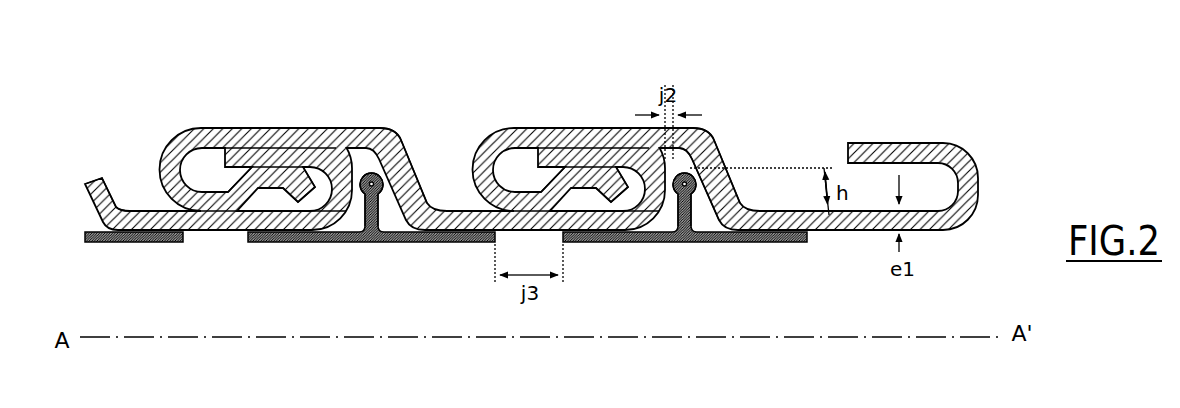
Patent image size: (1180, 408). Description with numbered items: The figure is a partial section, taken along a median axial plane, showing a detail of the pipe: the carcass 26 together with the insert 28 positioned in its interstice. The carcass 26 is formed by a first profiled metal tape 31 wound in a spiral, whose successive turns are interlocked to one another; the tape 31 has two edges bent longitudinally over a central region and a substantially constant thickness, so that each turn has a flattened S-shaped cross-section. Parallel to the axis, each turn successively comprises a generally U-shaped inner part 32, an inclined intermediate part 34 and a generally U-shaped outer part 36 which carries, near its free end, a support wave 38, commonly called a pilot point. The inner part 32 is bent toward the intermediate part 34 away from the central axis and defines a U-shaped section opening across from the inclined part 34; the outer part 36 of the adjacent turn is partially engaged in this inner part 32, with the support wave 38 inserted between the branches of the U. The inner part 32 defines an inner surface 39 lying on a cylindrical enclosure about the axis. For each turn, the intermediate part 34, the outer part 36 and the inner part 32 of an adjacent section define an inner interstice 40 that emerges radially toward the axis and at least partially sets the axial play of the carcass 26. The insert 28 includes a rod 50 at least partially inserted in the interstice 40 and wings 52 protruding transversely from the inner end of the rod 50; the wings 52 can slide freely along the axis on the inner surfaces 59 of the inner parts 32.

The carcass 26 is at (111, 117).
The insert 28 is at (736, 283).
The first profiled metal tape 31 is at (705, 99).
The inner part 32 is at (421, 227).
The inclined intermediate part 34 is at (403, 140).
The outer part 36 is at (277, 128).
The support wave 38 is at (586, 192).
The inner surface 39 is at (521, 231).
The inner interstice 40 is at (708, 236).
The rod 50 is at (705, 192).
The wings 52 is at (622, 243).
The inner surfaces 59 is at (829, 215).